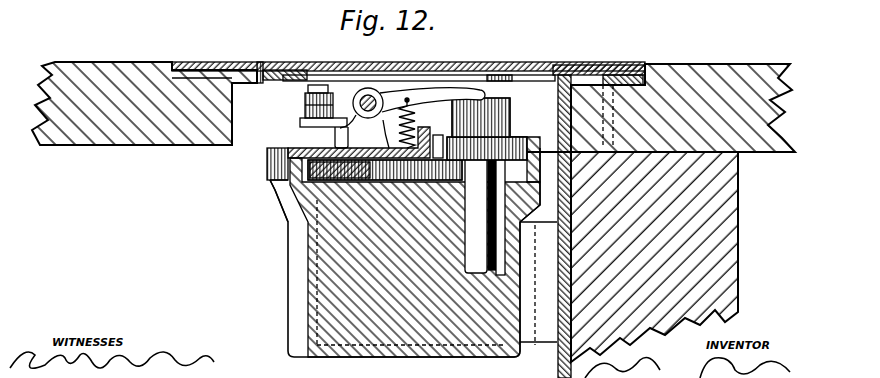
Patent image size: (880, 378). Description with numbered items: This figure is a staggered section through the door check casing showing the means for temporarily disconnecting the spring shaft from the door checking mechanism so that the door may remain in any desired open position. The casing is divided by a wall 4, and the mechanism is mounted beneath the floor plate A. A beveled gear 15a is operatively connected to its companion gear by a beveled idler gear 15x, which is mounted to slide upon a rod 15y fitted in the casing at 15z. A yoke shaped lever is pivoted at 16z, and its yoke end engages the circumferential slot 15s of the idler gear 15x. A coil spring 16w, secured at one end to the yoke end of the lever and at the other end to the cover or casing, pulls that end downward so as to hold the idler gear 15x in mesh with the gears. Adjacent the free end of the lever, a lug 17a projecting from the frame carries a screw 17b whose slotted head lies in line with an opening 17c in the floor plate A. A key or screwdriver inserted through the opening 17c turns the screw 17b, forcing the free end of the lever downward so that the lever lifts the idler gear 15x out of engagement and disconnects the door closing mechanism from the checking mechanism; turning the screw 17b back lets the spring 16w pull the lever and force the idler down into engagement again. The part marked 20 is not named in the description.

The floor plate A is at (238, 72).
The wall 4 is at (328, 290).
The beveled gear 15a is at (335, 185).
The circumferential slot 15s is at (586, 68).
The beveled idler gear 15x is at (472, 145).
The rod 15y is at (470, 227).
The rod fitting in casing 15z is at (496, 283).
The coil spring 16w is at (462, 78).
The lever pivot 16z is at (376, 96).
The lug 17a is at (318, 133).
The screw 17b is at (307, 92).
The opening 17c is at (322, 84).
The cap nut 20 is at (268, 162).